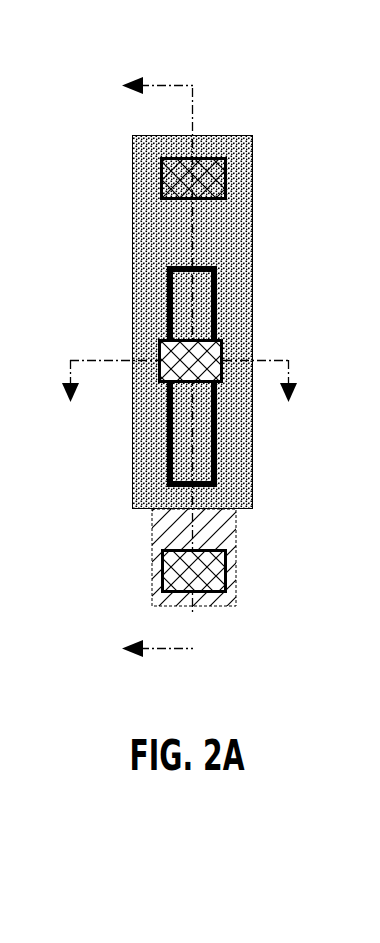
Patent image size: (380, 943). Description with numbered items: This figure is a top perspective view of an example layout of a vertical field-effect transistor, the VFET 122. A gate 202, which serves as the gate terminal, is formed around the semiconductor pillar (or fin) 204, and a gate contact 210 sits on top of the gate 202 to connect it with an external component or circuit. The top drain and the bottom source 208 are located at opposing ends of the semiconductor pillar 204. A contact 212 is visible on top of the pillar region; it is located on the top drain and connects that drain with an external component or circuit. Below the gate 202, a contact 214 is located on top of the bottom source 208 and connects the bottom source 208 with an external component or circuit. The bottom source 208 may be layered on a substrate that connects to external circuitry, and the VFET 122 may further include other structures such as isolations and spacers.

The VFET 122 is at (167, 28).
The gate 202 is at (227, 239).
The semiconductor pillar 204 is at (204, 313).
The bottom source 208 is at (227, 534).
The gate contact 210 is at (224, 175).
The contact 212 is at (167, 353).
The contact 214 is at (168, 573).